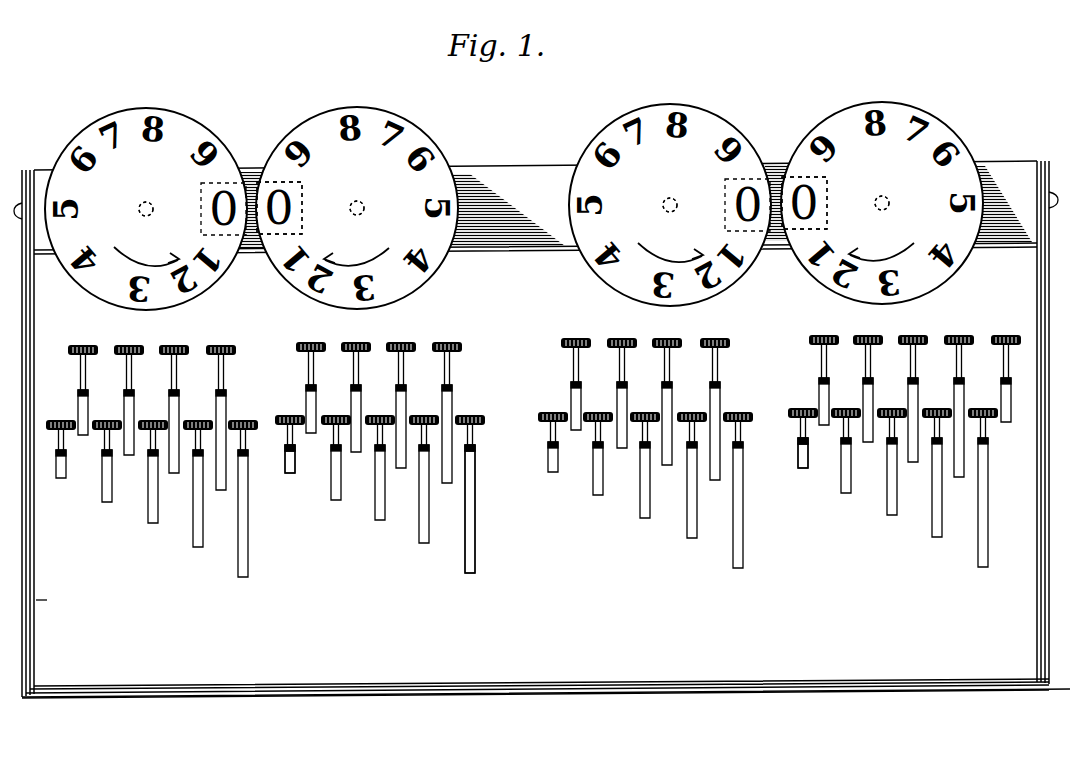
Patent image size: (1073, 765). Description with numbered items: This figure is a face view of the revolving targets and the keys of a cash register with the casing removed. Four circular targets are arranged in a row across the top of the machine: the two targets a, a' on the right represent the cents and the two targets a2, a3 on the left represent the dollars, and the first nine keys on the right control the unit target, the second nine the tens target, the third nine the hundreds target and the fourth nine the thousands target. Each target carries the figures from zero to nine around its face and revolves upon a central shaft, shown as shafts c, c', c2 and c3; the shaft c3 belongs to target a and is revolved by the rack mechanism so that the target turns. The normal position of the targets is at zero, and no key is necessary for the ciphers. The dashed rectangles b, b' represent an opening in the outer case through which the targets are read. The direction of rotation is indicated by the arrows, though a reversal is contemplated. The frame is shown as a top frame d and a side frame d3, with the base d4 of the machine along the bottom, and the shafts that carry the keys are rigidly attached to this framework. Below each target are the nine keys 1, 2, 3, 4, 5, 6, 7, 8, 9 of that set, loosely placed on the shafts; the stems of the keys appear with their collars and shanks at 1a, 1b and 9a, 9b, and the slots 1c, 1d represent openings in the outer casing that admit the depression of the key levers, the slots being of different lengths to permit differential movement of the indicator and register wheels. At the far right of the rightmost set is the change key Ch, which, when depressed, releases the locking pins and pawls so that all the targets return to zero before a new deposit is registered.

The unit target a is at (882, 203).
The tens target a' is at (670, 205).
The hundreds target a2 is at (357, 208).
The thousands target a3 is at (146, 209).
The casing opening b is at (290, 208).
The casing opening b' is at (818, 202).
The target shaft c is at (143, 222).
The target shaft c' is at (371, 205).
The target shaft c2 is at (664, 208).
The target shaft c3 is at (889, 204).
The frame d is at (542, 429).
The frame d3 is at (1037, 627).
The base d4 is at (520, 686).
The key 1 is at (432, 432).
The key 2 is at (453, 374).
The key 3 is at (476, 444).
The key 4 is at (498, 384).
The key 5 is at (522, 454).
The key 6 is at (543, 393).
The key 7 is at (567, 466).
The key 8 is at (590, 401).
The key 9 is at (613, 481).
The key stem collar 1a is at (278, 449).
The key stem 1b is at (278, 466).
The key slot 1c is at (790, 445).
The key slot 1d is at (790, 460).
The key stem collar 9a is at (483, 456).
The key stem 9b is at (485, 512).
The change key Ch is at (1006, 367).